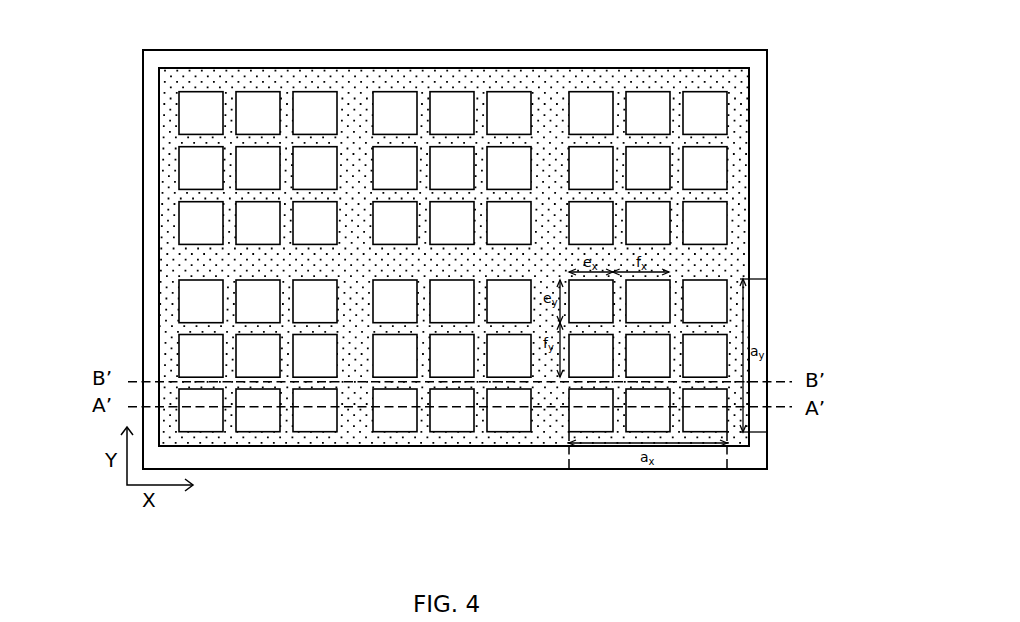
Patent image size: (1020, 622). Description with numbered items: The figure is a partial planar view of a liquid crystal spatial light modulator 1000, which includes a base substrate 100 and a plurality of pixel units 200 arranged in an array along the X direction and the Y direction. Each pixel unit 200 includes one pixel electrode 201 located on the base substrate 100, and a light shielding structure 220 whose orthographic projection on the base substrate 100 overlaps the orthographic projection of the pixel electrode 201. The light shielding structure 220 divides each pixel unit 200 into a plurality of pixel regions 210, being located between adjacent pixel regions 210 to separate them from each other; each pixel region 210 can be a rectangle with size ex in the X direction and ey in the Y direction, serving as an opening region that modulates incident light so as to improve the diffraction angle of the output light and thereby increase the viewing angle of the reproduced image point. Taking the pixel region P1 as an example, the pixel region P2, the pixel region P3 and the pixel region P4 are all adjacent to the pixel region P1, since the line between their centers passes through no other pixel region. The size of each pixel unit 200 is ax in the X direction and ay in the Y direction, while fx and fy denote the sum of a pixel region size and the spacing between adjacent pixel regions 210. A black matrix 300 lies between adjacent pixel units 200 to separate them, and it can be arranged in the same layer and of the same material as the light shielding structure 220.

The liquid crystal spatial light modulator 1000 is at (470, 257).
The base substrate 100 is at (422, 259).
The pixel unit 200 is at (403, 257).
The pixel electrode 201 is at (403, 257).
The pixel region 210 is at (402, 157).
The light shielding structure 220 is at (402, 301).
The black matrix 300 is at (402, 371).
The pixel region P1 is at (316, 113).
The pixel region P2 is at (258, 113).
The pixel region P3 is at (258, 168).
The pixel region P4 is at (316, 168).